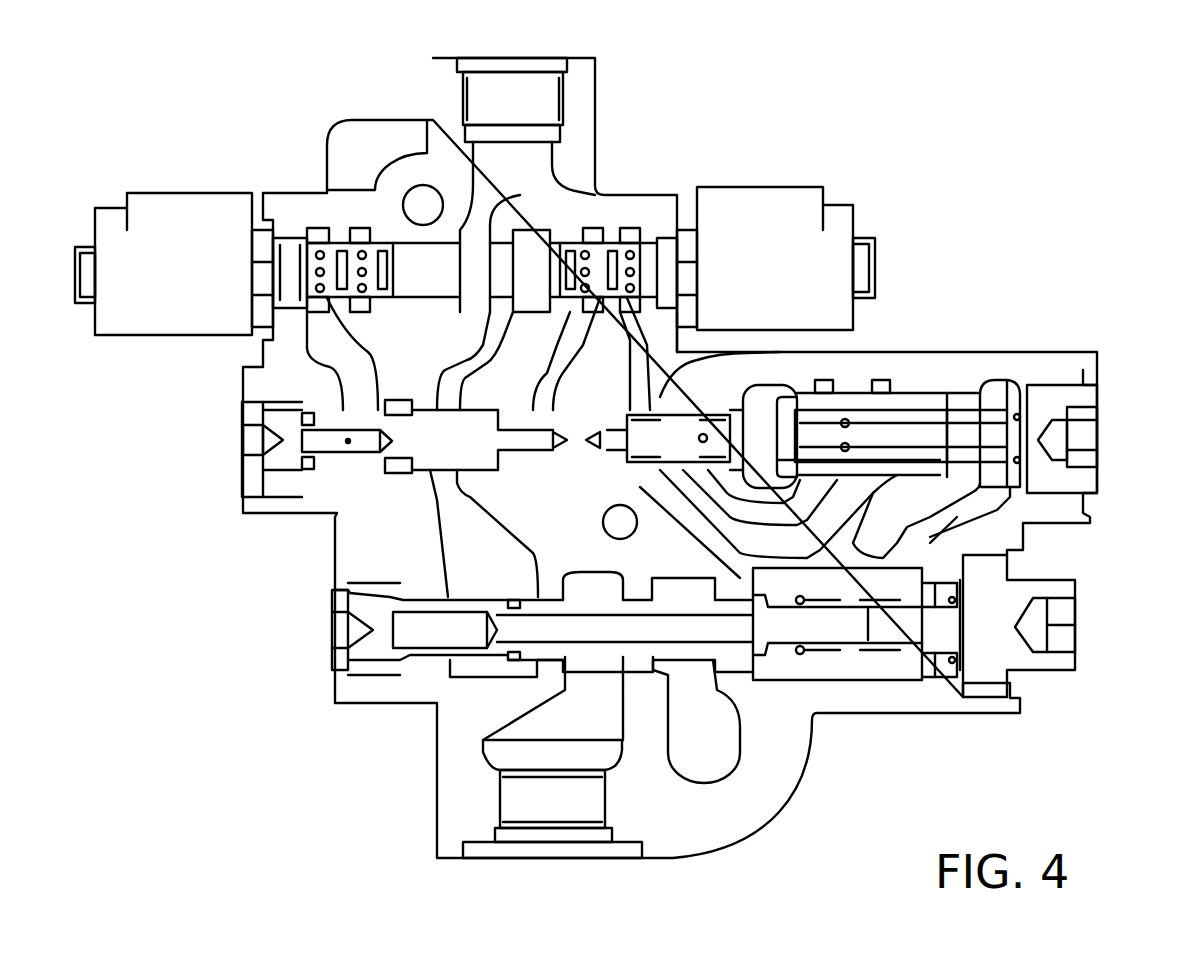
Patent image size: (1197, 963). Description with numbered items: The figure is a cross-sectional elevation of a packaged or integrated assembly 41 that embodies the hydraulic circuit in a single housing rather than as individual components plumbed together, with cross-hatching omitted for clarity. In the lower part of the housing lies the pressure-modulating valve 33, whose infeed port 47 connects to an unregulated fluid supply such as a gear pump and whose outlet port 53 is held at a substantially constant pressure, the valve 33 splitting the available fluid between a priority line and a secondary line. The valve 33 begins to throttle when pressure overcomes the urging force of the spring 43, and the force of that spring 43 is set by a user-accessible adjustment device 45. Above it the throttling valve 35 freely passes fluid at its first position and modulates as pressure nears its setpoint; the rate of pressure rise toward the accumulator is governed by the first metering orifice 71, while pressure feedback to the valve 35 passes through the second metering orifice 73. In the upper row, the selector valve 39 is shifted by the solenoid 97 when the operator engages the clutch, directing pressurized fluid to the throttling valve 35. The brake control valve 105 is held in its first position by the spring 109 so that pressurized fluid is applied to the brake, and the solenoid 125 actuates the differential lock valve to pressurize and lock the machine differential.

The integrated assembly 41 is at (975, 262).
The outlet port 53 is at (530, 62).
The solenoid 125 is at (169, 193).
The solenoid 97 is at (838, 205).
The brake control valve 105 is at (417, 432).
The selector valve 39 is at (600, 238).
The spring 109 is at (316, 470).
The second metering orifice 73 is at (555, 450).
The metering orifice 71 is at (597, 450).
The throttling valve 35 is at (735, 357).
The pressure-modulating valve 33 is at (428, 660).
The spring 43 is at (882, 655).
The adjustment device 45 is at (1077, 590).
The infeed port 47 is at (545, 850).